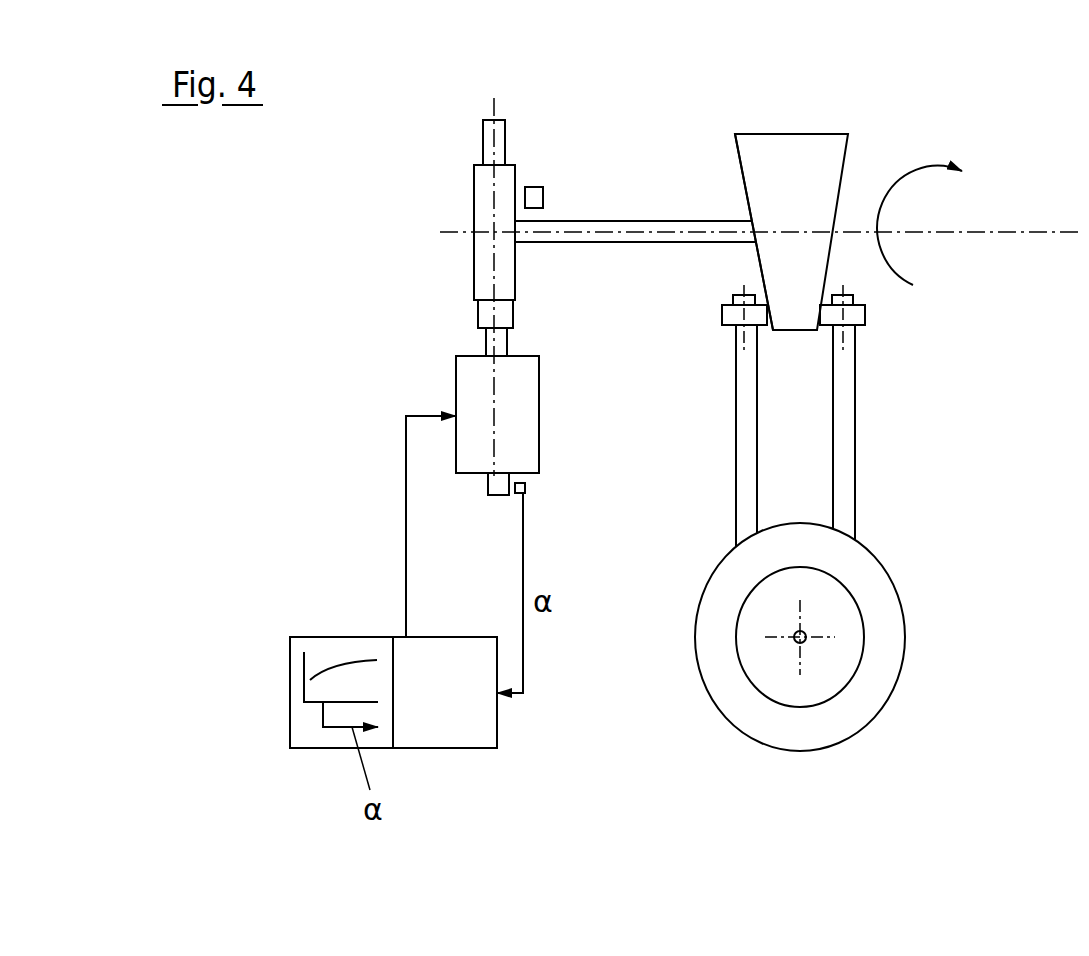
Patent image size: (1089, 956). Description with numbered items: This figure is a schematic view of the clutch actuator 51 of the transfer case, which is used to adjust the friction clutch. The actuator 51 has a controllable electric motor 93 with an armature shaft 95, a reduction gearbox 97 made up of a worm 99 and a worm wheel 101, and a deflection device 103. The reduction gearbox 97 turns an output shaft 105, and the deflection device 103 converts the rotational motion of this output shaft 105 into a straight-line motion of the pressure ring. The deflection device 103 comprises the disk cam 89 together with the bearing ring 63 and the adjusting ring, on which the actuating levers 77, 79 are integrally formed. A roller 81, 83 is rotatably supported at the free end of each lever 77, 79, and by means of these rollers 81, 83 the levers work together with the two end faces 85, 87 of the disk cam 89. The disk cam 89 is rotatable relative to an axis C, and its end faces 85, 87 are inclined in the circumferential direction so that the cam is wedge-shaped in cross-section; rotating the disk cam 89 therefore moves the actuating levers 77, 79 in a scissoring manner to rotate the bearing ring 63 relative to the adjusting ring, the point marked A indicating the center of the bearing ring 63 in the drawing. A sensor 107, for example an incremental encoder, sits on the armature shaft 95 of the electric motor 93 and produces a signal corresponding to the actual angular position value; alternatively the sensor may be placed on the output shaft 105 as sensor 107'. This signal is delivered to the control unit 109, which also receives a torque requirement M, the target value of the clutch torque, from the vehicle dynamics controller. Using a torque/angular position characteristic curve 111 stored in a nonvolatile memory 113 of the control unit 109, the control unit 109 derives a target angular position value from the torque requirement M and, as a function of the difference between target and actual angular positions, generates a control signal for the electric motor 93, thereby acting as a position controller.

The actuator 51 is at (683, 783).
The bearing ring 63 is at (880, 625).
The actuating lever 77 is at (842, 430).
The actuating lever 79 is at (750, 445).
The roller 81 is at (857, 315).
The roller 83 is at (730, 313).
The end face 85 is at (852, 143).
The end face 87 is at (742, 177).
The disk cam 89 is at (782, 160).
The electric motor 93 is at (475, 378).
The armature shaft 95 is at (488, 495).
The reduction gearbox 97 is at (433, 197).
The worm 99 is at (492, 317).
The worm wheel 101 is at (488, 257).
The deflection device 103 is at (716, 260).
The output shaft 105 is at (613, 230).
The sensor 107 is at (566, 486).
The sensor 107' is at (556, 163).
The control unit 109 is at (478, 713).
The torque/angular position characteristic curve 111 is at (347, 690).
The nonvolatile memory 113 is at (307, 717).
The roller axis A is at (807, 642).
The axis C is at (1030, 230).
The torque requirement M is at (323, 637).